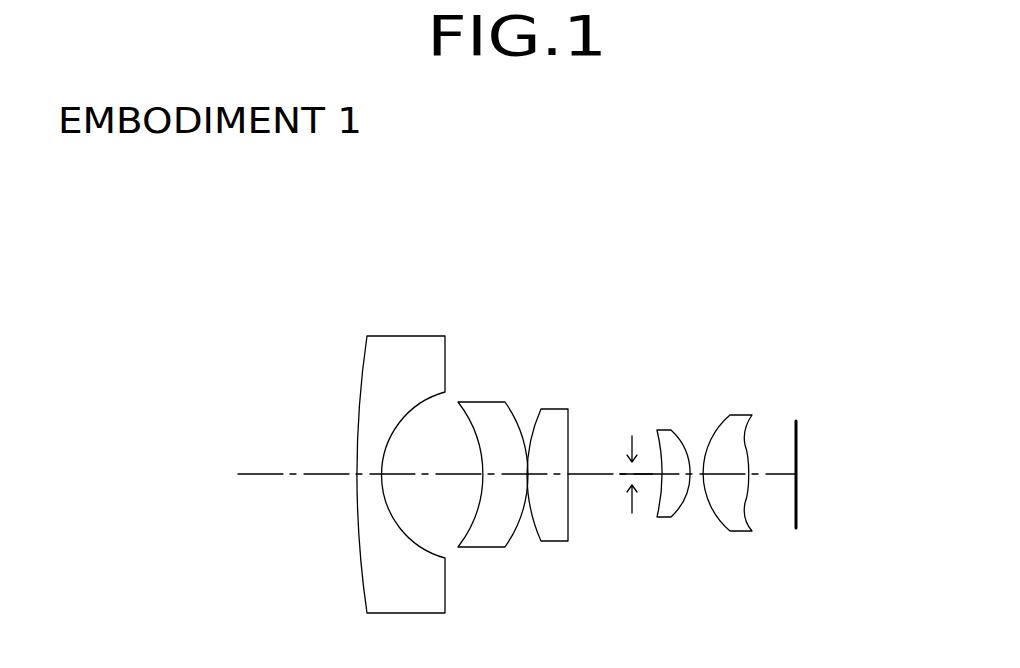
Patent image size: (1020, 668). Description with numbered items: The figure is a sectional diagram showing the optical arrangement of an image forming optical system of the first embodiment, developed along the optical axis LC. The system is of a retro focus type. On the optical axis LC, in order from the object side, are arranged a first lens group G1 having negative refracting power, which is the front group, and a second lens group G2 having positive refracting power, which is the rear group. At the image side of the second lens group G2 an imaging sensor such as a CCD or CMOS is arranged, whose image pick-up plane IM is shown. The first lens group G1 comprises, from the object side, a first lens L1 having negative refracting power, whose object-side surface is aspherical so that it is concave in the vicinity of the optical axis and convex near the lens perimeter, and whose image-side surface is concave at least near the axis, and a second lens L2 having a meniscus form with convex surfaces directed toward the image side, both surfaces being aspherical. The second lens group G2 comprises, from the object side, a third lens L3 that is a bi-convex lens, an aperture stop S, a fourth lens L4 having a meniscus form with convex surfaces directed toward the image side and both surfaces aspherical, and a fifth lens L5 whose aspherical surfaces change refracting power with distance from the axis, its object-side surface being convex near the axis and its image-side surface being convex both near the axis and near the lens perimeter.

The optical axis LC is at (302, 474).
The first lens group G1 is at (527, 217).
The second lens group G2 is at (753, 217).
The first lens L1 is at (405, 343).
The second lens L2 is at (485, 408).
The third lens L3 is at (553, 415).
The aperture stop S is at (632, 436).
The fourth lens L4 is at (667, 438).
The fifth lens L5 is at (738, 423).
The image pick-up plane IM is at (795, 443).